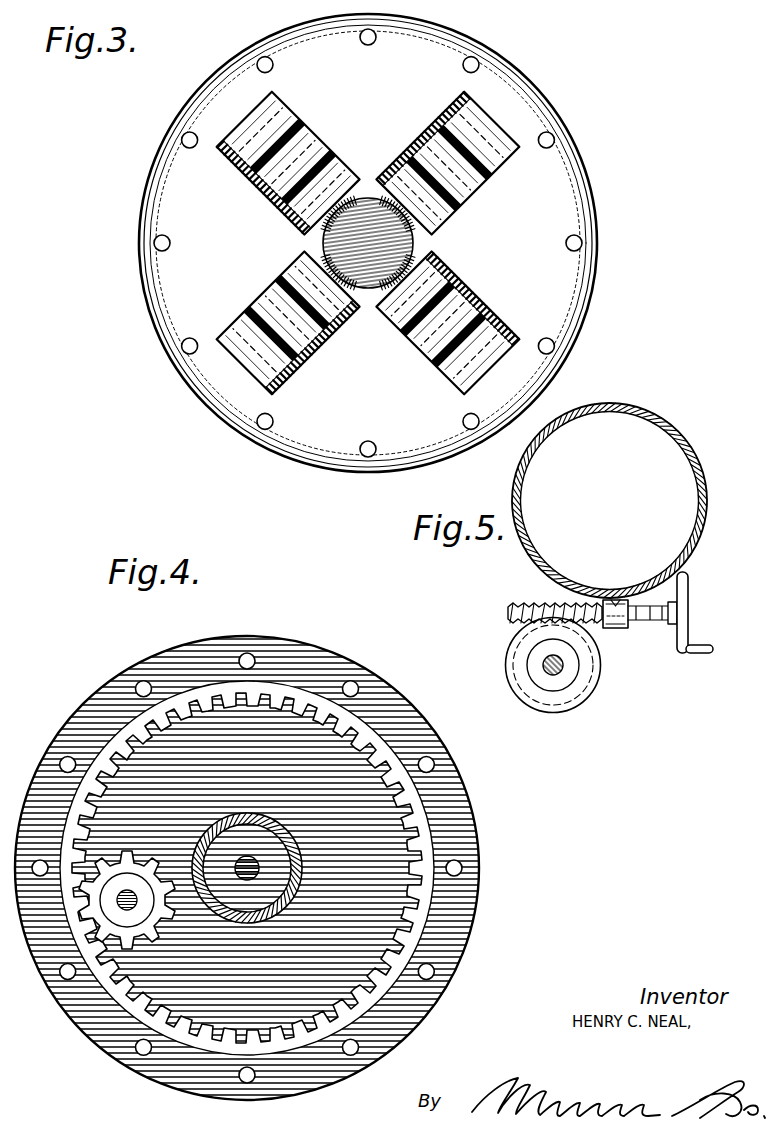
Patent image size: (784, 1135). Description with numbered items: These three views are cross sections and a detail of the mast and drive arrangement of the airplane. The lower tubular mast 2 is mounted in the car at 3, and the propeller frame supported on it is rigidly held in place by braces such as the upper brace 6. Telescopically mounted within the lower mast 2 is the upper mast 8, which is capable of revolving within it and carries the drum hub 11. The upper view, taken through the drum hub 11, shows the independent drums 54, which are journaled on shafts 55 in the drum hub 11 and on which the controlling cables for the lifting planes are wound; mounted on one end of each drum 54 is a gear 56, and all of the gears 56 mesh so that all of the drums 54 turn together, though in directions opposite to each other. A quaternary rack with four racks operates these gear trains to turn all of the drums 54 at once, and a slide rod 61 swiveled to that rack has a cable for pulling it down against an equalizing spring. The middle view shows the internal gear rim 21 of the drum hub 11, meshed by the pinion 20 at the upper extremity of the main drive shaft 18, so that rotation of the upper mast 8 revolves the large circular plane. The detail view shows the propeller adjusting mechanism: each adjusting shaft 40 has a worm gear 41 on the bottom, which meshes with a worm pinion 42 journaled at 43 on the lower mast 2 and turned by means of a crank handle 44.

In FIG. 3, the drum hub 11 is at (597, 281).
In FIG. 4, the drum hub 11 is at (476, 829).
In FIG. 3, the upper brace 6 is at (318, 248).
In FIG. 3, the upper mast 8 is at (362, 198).
In FIG. 3, the drum 54 is at (505, 156).
In FIG. 3, the shaft 55 is at (244, 167).
In FIG. 3, the gear 56 is at (427, 132).
In FIG. 4, the internal gear rim 21 is at (407, 787).
In FIG. 4, the pinion 20 is at (127, 896).
In FIG. 4, the main drive shaft 18 is at (133, 907).
In FIG. 4, the mounting of the lower mast 3 is at (296, 823).
In FIG. 4, the slide rod 61 is at (260, 868).
In FIG. 5, the lower tubular mast 2 is at (707, 502).
In FIG. 5, the worm pinion 42 is at (509, 622).
In FIG. 5, the journal of the worm pinion 43 is at (617, 628).
In FIG. 5, the crank handle 44 is at (700, 648).
In FIG. 5, the adjusting shaft 40 is at (553, 665).
In FIG. 5, the worm gear 41 is at (570, 703).